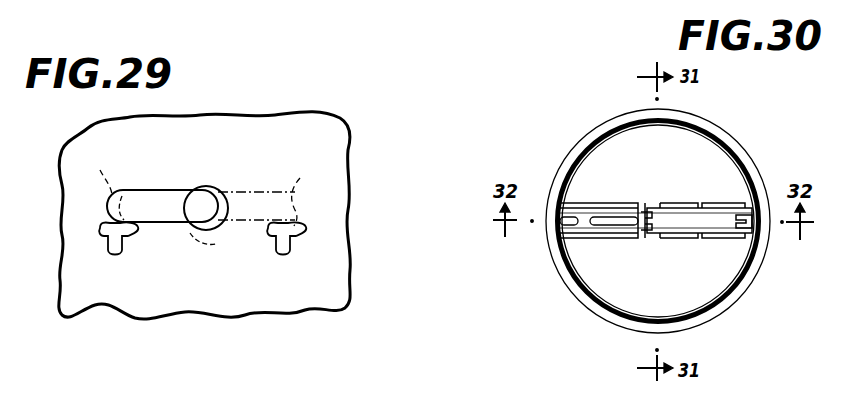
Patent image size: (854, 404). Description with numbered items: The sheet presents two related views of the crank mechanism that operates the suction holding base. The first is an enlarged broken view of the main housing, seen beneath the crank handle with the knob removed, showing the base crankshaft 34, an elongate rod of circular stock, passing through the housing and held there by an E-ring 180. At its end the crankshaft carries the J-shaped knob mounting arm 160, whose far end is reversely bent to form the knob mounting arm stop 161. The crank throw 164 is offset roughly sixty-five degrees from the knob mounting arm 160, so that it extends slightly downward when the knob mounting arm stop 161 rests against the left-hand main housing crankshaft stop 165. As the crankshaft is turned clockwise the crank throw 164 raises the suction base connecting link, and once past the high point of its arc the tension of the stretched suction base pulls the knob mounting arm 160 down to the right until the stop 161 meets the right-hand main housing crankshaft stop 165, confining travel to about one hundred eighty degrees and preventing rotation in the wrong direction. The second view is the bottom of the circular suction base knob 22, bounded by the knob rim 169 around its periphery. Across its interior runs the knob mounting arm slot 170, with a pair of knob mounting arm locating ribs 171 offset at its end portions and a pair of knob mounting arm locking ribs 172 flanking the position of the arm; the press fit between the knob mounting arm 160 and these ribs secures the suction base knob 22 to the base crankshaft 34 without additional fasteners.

In FIG. 30, the suction base knob 22 is at (562, 152).
In FIG. 29, the base crankshaft 34 is at (157, 191).
In FIG. 29, the knob mounting arm 160 is at (160, 222).
In FIG. 29, the knob mounting arm stop 161 is at (308, 170).
In FIG. 29, the crank throw 164 is at (212, 246).
In FIG. 29, the main housing crankshaft stops 165 is at (100, 229).
In FIG. 30, the knob rim 169 is at (748, 160).
In FIG. 30, the knob mounting arm slot 170 is at (710, 211).
In FIG. 30, the knob mounting arm locating ribs 171 is at (648, 210).
In FIG. 30, the knob mounting arm locking ribs 172 is at (700, 238).
In FIG. 29, the E-ring 180 is at (215, 190).